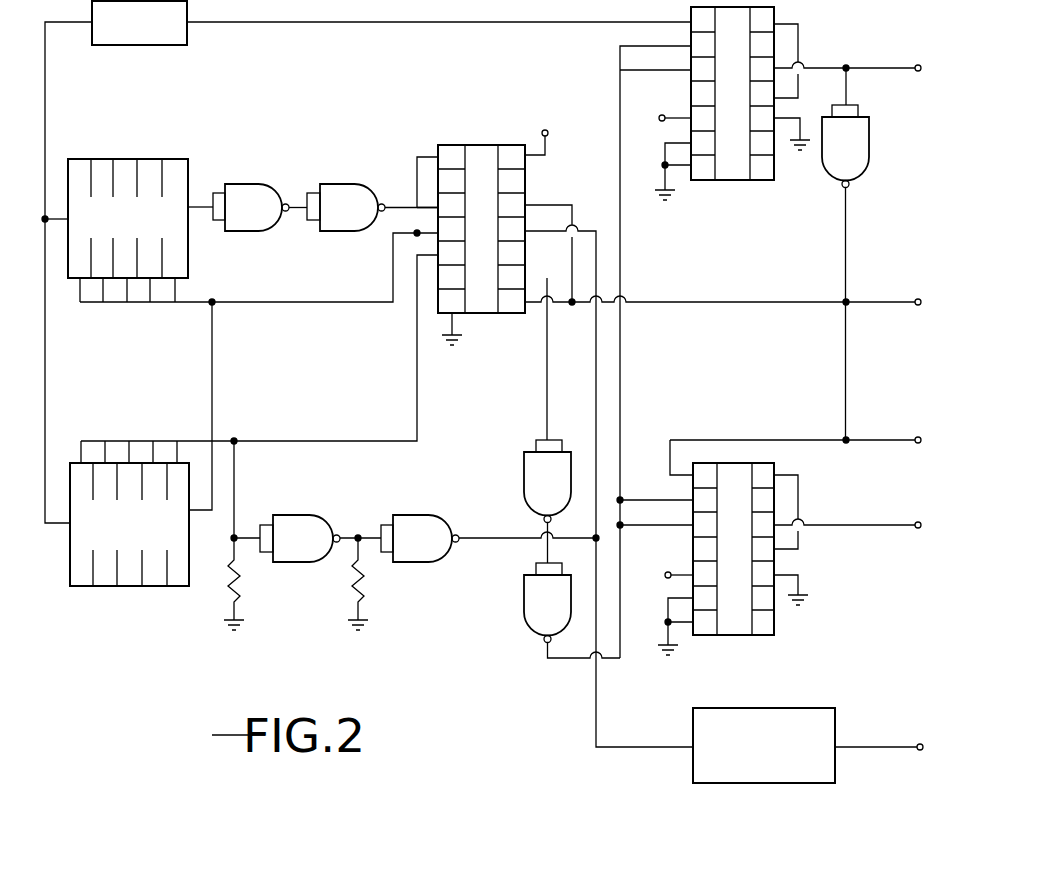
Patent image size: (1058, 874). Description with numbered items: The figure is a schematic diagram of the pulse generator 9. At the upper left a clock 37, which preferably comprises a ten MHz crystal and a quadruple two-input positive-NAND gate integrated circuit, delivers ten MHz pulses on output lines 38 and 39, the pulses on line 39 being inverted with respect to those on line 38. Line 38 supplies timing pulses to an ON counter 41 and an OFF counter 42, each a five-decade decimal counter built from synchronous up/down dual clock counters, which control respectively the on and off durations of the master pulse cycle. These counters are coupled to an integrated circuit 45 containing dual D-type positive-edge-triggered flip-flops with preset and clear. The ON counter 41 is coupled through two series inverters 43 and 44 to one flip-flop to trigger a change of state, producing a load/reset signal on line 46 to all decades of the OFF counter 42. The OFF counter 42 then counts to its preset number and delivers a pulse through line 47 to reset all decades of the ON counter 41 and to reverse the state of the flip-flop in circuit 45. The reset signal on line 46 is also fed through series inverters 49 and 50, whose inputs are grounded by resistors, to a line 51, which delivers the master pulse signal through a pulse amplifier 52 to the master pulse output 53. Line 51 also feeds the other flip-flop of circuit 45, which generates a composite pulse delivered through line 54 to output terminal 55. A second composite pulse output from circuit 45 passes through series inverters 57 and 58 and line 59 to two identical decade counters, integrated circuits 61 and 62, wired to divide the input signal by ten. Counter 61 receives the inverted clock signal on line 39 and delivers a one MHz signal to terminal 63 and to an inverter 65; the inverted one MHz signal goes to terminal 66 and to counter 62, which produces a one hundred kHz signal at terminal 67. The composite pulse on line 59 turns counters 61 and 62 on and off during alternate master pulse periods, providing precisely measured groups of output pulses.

The pulse generator 9 is at (192, 616).
The clock 37 is at (143, 46).
The output line 38 is at (45, 118).
The output line 39 is at (425, 24).
The ON counter 41 is at (178, 158).
The OFF counter 42 is at (85, 588).
The inverter 43 is at (256, 188).
The inverter 44 is at (347, 190).
The type 7474 integrated circuit 45 is at (465, 145).
The line 46 is at (320, 441).
The line 47 is at (333, 302).
The inverter 49 is at (303, 524).
The inverter 50 is at (430, 523).
The line 51 is at (513, 506).
The pulse amplifier 52 is at (775, 776).
The master pulse output 53 is at (920, 744).
The line 54 is at (708, 300).
The output terminal 55 is at (918, 299).
The inverter 57 is at (530, 465).
The inverter 58 is at (538, 602).
The line 59 is at (620, 388).
The integrated circuit 61 is at (730, 182).
The integrated circuit 62 is at (740, 637).
The terminal 63 is at (918, 65).
The inverter 65 is at (860, 152).
The terminal 66 is at (918, 437).
The terminal 67 is at (918, 522).